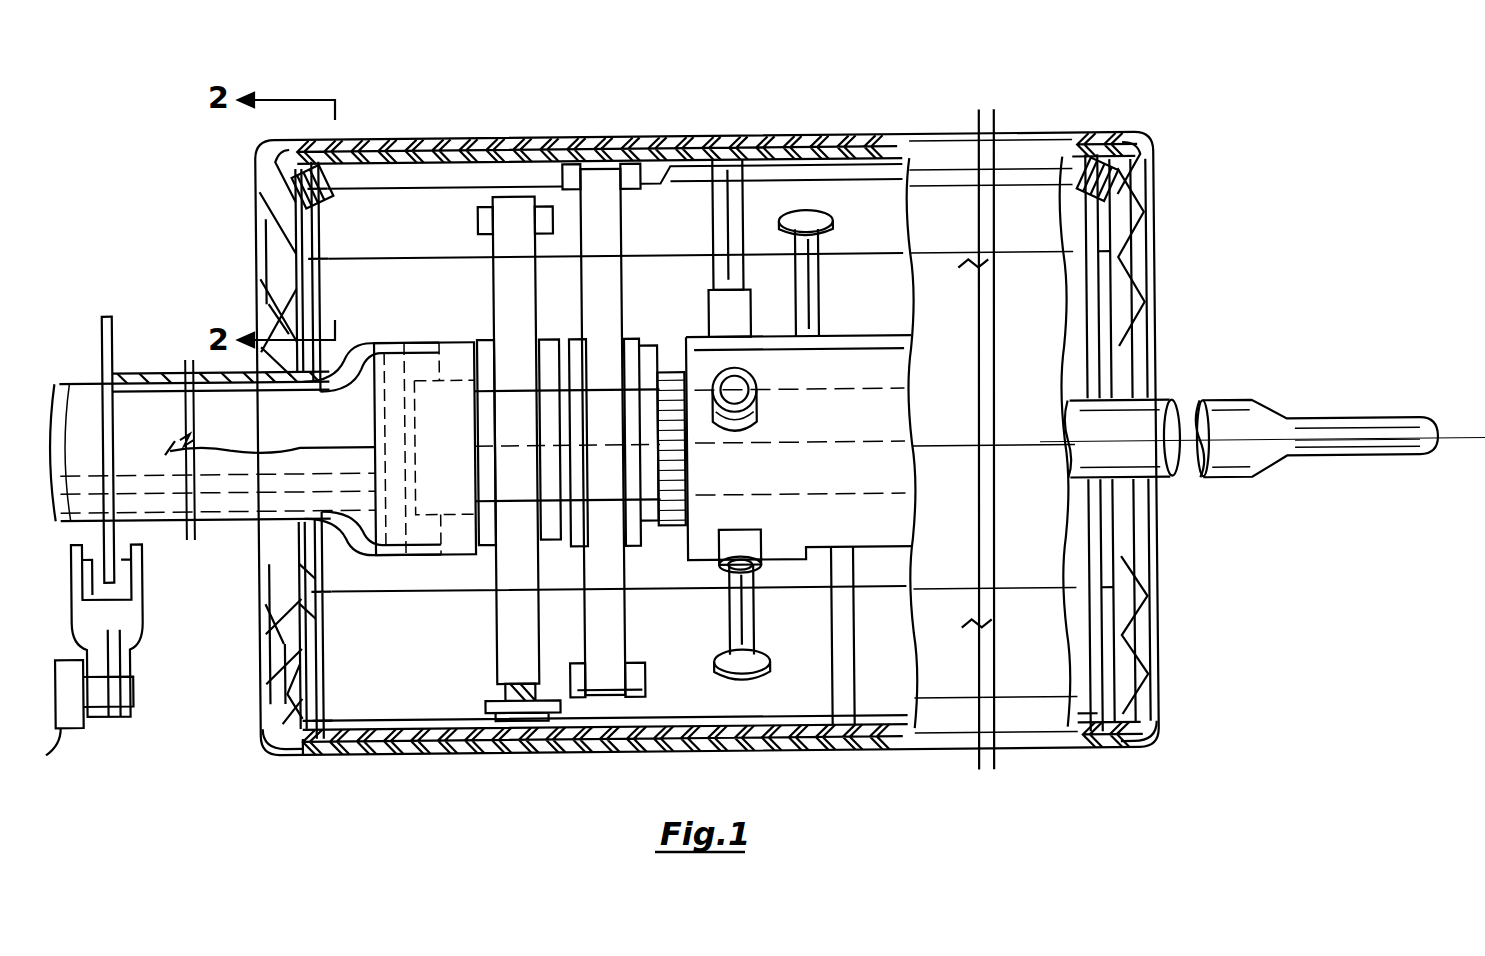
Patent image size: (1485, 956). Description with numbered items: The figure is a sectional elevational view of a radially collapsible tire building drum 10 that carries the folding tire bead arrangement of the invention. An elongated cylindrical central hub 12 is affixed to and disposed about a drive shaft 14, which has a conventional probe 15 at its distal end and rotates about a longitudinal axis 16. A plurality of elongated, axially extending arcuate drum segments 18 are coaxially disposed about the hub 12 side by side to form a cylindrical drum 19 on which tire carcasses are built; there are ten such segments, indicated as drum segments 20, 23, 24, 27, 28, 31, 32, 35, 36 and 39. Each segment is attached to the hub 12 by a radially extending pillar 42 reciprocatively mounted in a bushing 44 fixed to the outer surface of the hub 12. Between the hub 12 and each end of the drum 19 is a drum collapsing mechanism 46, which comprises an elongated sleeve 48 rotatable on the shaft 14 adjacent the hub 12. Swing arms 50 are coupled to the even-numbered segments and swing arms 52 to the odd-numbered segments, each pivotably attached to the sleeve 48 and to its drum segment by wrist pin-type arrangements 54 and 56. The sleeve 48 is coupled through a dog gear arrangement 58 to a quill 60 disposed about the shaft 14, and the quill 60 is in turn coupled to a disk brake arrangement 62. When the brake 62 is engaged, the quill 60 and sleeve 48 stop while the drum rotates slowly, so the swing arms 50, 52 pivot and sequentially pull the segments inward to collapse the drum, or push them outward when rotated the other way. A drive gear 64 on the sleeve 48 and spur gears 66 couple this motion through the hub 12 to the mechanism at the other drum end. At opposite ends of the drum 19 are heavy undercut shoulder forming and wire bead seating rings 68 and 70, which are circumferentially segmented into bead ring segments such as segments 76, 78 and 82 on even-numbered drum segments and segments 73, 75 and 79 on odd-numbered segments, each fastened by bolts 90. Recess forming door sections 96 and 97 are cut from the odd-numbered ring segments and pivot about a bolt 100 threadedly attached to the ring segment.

The collapsible tire building drum 10 is at (716, 130).
The central hub 12 is at (835, 345).
The drive shaft 14 is at (150, 395).
The probe 15 is at (1355, 458).
The longitudinal axis 16 is at (1348, 460).
The drum segments 18 is at (440, 752).
The cylindrical drum 19 is at (1008, 150).
The drum segment 20 is at (950, 226).
The drum segment 23 is at (386, 140).
The drum segment 24 is at (432, 222).
The drum segment 27 is at (422, 316).
The drum segment 28 is at (407, 582).
The drum segment 31 is at (427, 677).
The drum segment 32 is at (370, 750).
The drum segment 35 is at (950, 637).
The drum segment 36 is at (950, 552).
The drum segment 39 is at (950, 376).
The pillars 42 is at (728, 212).
The bushings 44 is at (752, 384).
The drum collapsing mechanism 46 is at (482, 236).
The sleeve 48 is at (528, 495).
The swing arms 50 is at (497, 270).
The swing arms 52 is at (600, 295).
The wrist pin-type arrangement 54 is at (640, 345).
The wrist pin-type arrangement 56 is at (655, 675).
The dog gear arrangement 58 is at (410, 400).
The quill 60 is at (125, 372).
The disk brake arrangement 62 is at (147, 600).
The drive gear 64 is at (657, 460).
The spur gears 66 is at (657, 400).
The bead seating ring 68 is at (255, 268).
The bead seating ring 70 is at (1158, 272).
The bead ring segment 73 is at (262, 155).
The bead ring segment 75 is at (272, 300).
The bead ring segment 76 is at (282, 228).
The bead ring segment 78 is at (285, 562).
The bead ring segment 79 is at (280, 655).
The bead ring segment 82 is at (268, 740).
The bolts 90 is at (302, 752).
The door section 96 is at (305, 622).
The door section 97 is at (305, 662).
The bolt 100 is at (330, 195).